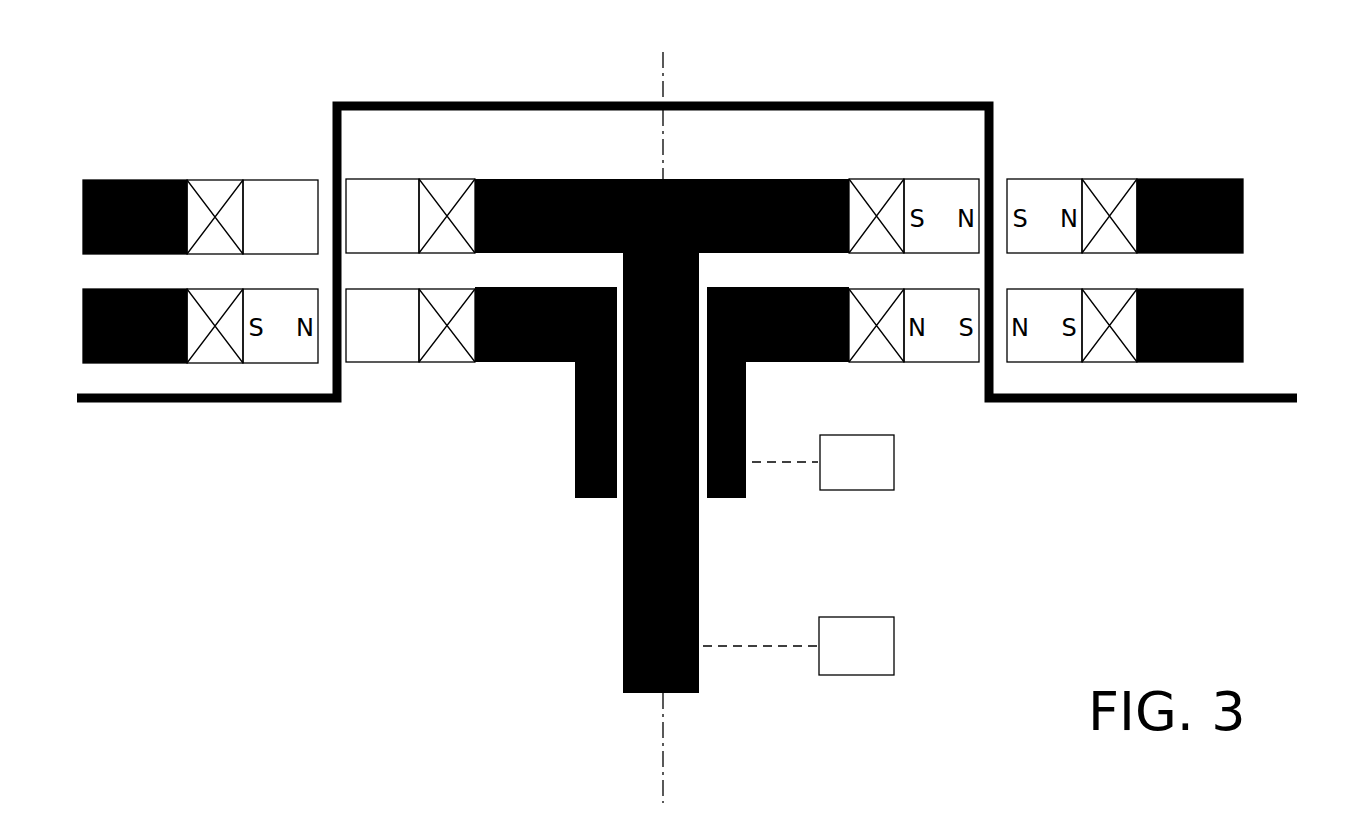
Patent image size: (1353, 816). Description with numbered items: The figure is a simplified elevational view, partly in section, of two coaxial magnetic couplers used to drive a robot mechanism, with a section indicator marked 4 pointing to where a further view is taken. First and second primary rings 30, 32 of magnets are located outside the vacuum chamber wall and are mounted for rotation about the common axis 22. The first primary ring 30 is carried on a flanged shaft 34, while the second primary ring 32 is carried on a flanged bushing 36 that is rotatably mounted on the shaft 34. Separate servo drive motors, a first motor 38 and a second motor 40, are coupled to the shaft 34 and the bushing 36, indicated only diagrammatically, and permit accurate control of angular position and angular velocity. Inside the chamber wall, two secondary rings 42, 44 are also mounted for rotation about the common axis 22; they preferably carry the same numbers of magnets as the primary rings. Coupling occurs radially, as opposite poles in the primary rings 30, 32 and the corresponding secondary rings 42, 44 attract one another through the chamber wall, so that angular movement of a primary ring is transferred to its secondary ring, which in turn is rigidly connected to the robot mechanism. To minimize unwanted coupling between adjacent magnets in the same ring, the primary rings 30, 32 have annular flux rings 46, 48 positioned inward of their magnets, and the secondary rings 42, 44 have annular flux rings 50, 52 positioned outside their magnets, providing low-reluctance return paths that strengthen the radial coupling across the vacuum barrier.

The section view indicator (FIG. 4) 4 is at (1262, 143).
The common axis 22 is at (663, 81).
The first primary ring 30 is at (407, 147).
The second primary ring 32 is at (395, 404).
The flanged shaft 34 is at (700, 555).
The flanged bushing 36 is at (746, 409).
The motor M1 38 is at (894, 459).
The motor M2 40 is at (894, 645).
The secondary ring 42 is at (258, 128).
The secondary ring 44 is at (252, 380).
The annular flux ring 46 is at (448, 179).
The annular flux ring 48 is at (448, 362).
The annular flux ring 50 is at (215, 180).
The annular flux ring 52 is at (215, 363).